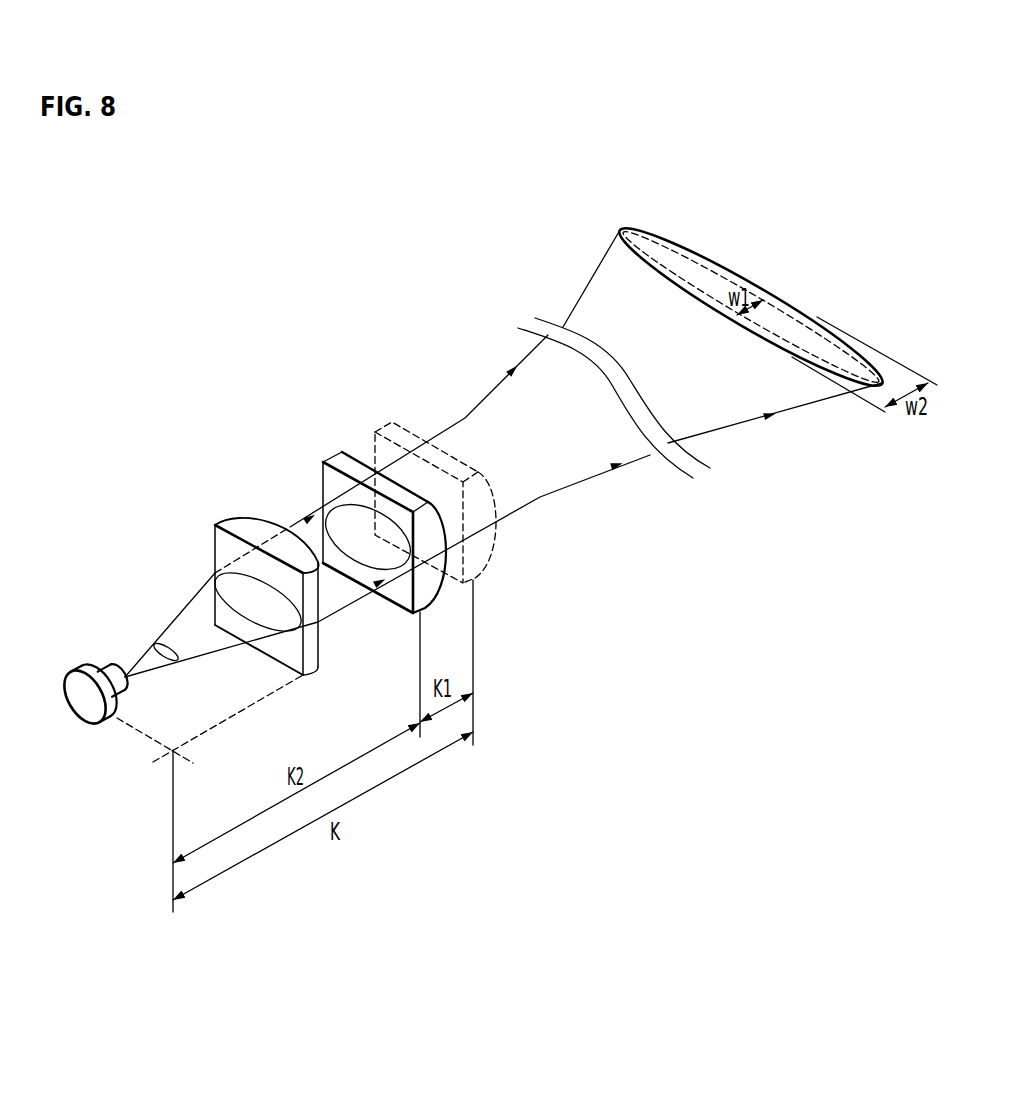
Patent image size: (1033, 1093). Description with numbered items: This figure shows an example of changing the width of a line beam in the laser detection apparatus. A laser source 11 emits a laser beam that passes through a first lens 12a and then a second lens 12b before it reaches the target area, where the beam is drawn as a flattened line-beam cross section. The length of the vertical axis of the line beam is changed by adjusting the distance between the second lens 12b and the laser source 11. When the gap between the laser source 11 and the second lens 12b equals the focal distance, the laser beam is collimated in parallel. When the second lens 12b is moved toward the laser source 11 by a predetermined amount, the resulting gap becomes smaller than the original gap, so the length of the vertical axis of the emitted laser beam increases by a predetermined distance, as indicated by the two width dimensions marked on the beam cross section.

The laser source 11 is at (86, 710).
The first lens 12a is at (230, 522).
The second lens 12b is at (335, 455).